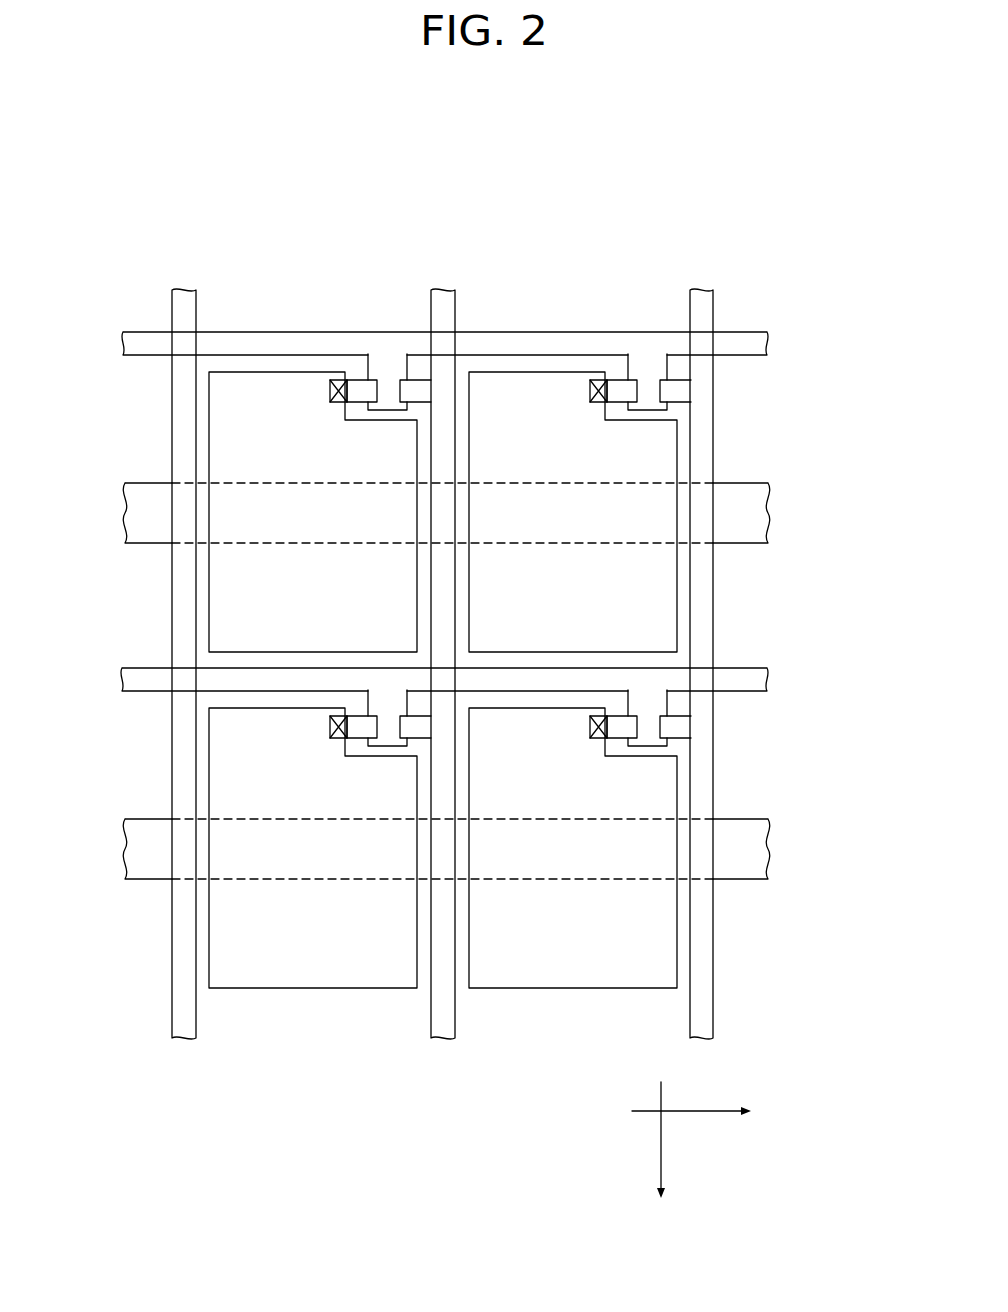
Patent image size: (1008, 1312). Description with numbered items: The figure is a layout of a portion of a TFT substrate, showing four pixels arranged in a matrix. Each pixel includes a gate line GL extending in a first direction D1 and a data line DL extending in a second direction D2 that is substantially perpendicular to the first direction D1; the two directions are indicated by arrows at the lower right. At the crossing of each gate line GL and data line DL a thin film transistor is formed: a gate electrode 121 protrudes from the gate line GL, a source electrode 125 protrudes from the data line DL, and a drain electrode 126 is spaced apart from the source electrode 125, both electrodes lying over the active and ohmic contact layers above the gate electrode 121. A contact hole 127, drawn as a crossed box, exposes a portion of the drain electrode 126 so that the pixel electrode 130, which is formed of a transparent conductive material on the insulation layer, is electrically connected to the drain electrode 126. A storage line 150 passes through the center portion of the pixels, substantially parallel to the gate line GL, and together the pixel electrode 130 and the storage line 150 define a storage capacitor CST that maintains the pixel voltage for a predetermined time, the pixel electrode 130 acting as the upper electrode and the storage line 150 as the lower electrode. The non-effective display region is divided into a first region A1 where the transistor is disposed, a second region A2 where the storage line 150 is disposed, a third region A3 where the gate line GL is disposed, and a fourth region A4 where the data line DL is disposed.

The gate electrode 121 is at (385, 393).
The source electrode 125 is at (415, 391).
The drain electrode 126 is at (360, 391).
The contact hole 127 is at (334, 392).
The pixel electrode 130 is at (209, 423).
The storage line 150 is at (762, 515).
The gate line GL is at (123, 341).
The data line DL is at (185, 292).
The storage capacitor CST is at (843, 438).
The first region A1 is at (377, 348).
The second region A2 is at (116, 512).
The third region A3 is at (630, 324).
The fourth region A4 is at (167, 945).
The first direction D1 is at (706, 1111).
The second direction D2 is at (662, 1151).